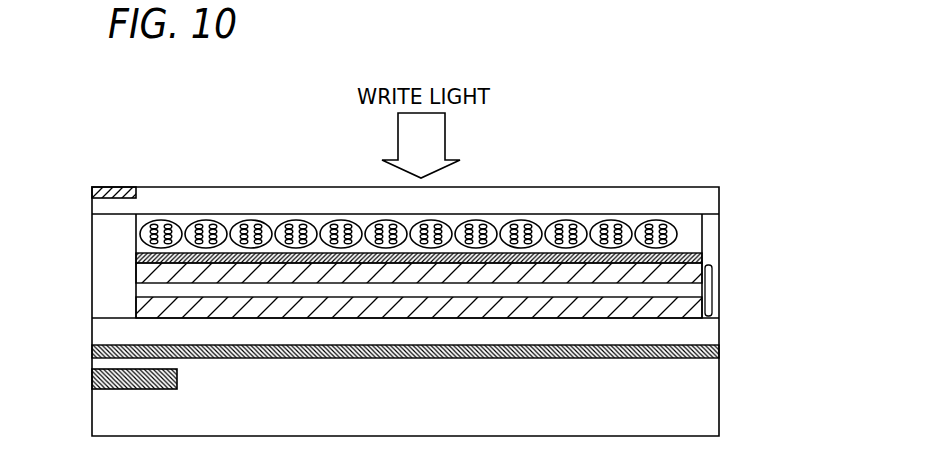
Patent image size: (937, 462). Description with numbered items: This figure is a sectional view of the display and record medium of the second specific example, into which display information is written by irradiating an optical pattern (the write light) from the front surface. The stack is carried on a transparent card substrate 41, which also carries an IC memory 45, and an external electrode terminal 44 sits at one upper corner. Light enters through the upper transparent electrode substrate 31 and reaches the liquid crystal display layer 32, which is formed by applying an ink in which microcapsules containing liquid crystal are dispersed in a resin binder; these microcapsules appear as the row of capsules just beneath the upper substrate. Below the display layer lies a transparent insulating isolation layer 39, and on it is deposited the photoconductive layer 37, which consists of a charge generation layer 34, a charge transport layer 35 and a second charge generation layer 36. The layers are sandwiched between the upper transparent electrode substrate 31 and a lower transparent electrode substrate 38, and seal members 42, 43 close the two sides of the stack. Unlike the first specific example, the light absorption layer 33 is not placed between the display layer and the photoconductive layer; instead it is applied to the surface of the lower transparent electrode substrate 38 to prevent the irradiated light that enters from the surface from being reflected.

The upper transparent electrode substrate 31 is at (637, 200).
The liquid crystal display layer 32 is at (702, 227).
The light absorption layer 33 is at (712, 351).
The charge generation layer 34 is at (136, 265).
The charge transport layer 35 is at (136, 283).
The charge generation layer 36 is at (136, 305).
The photoconductive layer 37 is at (712, 290).
The lower transparent electrode substrate 38 is at (711, 332).
The isolation layer 39 is at (702, 257).
The transparent card substrate 41 is at (711, 398).
The seal member 42 is at (113, 240).
The seal member 43 is at (712, 237).
The external electrode terminal 44 is at (110, 186).
The IC memory 45 is at (92, 377).